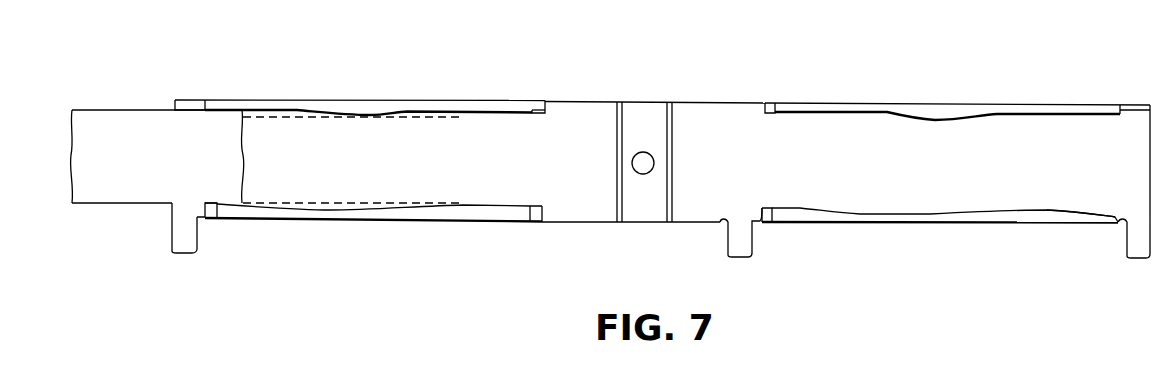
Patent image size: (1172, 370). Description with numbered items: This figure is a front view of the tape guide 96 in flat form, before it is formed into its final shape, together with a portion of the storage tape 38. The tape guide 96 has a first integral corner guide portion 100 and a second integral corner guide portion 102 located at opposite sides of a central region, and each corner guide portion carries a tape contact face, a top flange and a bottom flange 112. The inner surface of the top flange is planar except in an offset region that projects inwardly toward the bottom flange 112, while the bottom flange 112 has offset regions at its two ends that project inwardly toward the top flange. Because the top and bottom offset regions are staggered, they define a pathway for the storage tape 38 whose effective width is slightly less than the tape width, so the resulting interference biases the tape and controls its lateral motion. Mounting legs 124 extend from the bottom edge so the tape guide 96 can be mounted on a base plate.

The storage tape 38 is at (97, 182).
The tape guide 96 is at (614, 72).
The first integral corner guide portion 100 is at (360, 88).
The second integral corner guide portion 102 is at (957, 96).
The bottom flange 112 is at (940, 239).
The mounting legs 124 is at (182, 243).